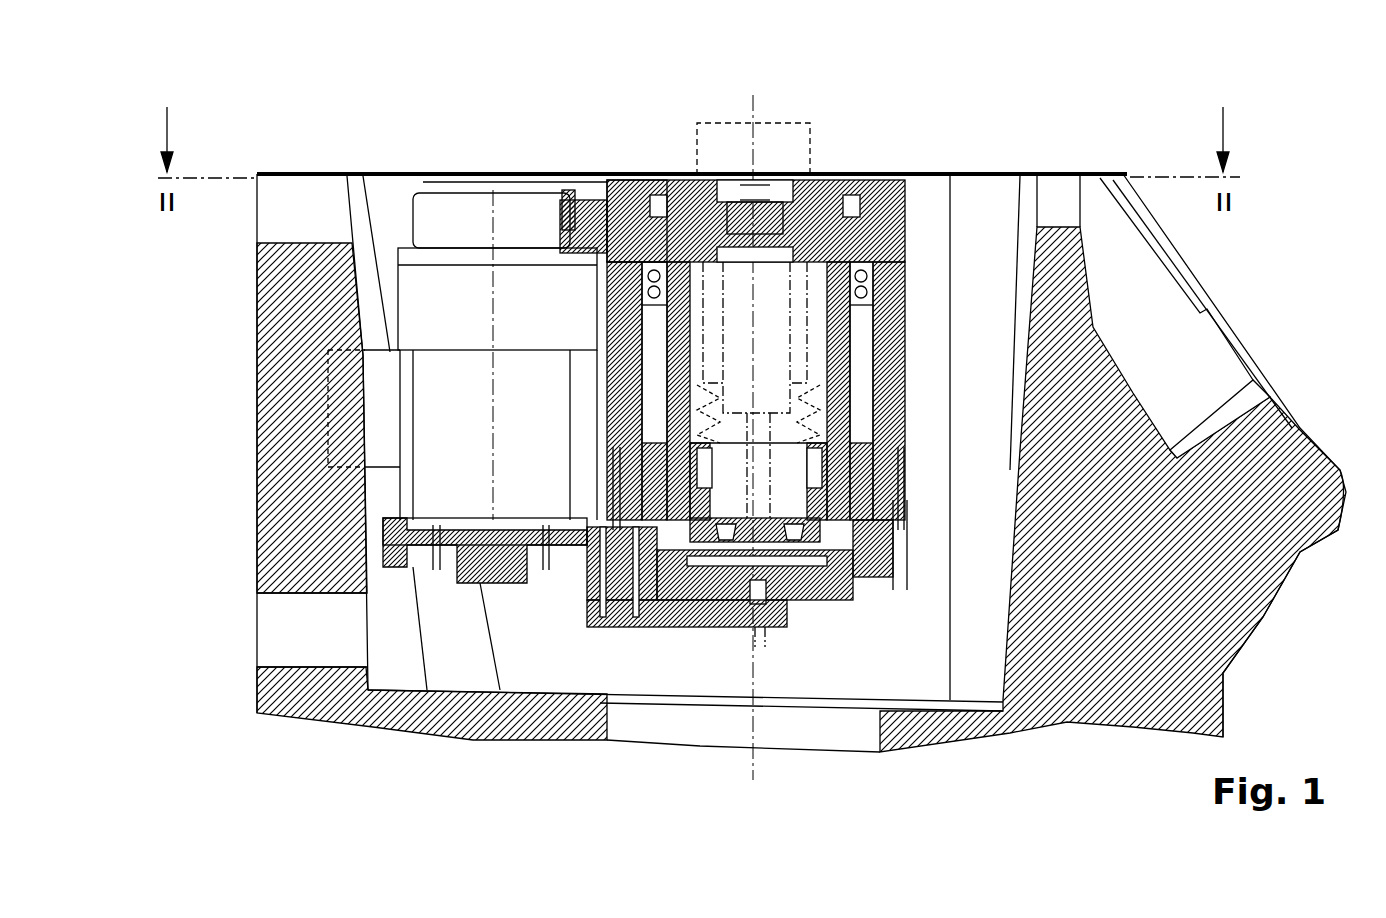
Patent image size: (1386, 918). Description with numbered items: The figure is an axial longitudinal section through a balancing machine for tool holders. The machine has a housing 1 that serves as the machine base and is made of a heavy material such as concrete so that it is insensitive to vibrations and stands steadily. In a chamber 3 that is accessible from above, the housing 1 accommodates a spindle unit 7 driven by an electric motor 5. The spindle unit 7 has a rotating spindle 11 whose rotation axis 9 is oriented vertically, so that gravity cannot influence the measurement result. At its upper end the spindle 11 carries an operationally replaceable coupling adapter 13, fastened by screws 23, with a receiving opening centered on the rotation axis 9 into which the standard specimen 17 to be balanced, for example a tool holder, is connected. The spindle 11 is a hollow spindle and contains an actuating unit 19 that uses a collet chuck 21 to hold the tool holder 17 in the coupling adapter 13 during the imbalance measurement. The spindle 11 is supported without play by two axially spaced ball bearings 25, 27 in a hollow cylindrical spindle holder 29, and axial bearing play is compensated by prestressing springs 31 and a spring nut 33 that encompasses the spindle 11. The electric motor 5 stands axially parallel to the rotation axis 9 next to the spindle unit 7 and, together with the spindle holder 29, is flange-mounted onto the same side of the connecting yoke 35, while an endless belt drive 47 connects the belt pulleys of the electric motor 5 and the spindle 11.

The housing 1 is at (1265, 580).
The chamber 3 is at (1000, 680).
The electric motor 5 is at (427, 283).
The spindle unit 7 is at (910, 237).
The rotation axis 9 is at (758, 488).
The spindle 11 is at (850, 355).
The coupling adapter 13 is at (826, 175).
The standard specimen 17 is at (697, 178).
The actuating unit 19 is at (758, 352).
The collet chuck 21 is at (768, 178).
The screws 23 is at (660, 178).
The ball bearing 25 is at (905, 277).
The ball bearing 27 is at (905, 515).
The spindle holder 29 is at (905, 398).
The prestressing springs 31 is at (607, 437).
The spring nut 33 is at (862, 555).
The connecting yoke 35 is at (395, 572).
The endless belt drive 47 is at (558, 572).